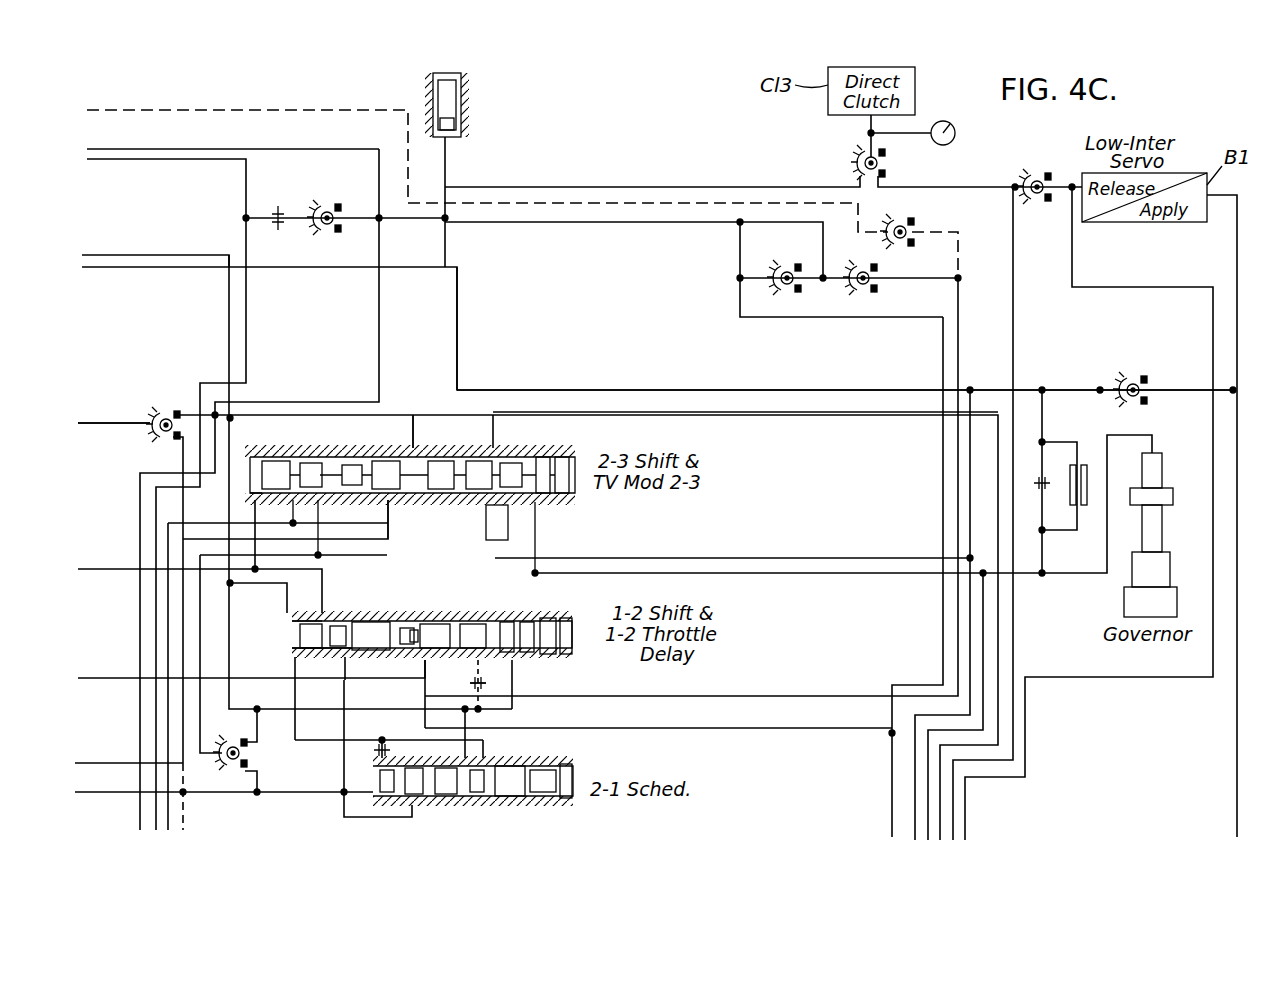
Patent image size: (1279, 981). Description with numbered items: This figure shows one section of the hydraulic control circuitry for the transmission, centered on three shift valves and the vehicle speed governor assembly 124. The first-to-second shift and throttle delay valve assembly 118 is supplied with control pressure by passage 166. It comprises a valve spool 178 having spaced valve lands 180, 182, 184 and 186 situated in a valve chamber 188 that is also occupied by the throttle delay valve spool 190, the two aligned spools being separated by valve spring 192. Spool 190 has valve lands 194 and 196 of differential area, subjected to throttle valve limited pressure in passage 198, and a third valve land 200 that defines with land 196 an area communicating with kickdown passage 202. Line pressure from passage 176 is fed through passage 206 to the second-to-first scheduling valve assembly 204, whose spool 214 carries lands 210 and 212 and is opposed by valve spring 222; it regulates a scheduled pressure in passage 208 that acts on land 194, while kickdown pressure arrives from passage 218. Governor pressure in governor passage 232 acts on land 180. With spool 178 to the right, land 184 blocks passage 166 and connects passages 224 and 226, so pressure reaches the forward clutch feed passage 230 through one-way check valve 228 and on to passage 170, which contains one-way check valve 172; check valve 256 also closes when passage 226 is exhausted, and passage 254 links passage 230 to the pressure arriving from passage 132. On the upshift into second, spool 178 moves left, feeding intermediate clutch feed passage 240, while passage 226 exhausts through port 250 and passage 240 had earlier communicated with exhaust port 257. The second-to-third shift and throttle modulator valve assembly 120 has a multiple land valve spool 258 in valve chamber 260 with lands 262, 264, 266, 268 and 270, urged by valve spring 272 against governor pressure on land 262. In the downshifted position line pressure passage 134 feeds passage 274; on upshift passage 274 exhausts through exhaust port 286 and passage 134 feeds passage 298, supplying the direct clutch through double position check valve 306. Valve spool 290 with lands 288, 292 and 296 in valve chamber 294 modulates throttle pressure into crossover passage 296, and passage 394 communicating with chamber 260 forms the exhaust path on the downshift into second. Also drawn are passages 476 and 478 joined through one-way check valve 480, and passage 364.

The passage 170 is at (232, 152).
The one-way check valve 172 is at (333, 200).
The passage 134 is at (105, 278).
The passage 176 is at (231, 326).
The one-way check valve 480 is at (158, 415).
The passage 478 is at (107, 422).
The passage 476 is at (140, 473).
The passage 274 is at (183, 540).
The passage 364 is at (156, 596).
The intermediate clutch feed passage 240 is at (100, 678).
The valve spool 290 is at (275, 461).
The crossover passage 296 is at (312, 463).
The valve land 288 is at (262, 457).
The valve chamber 294 is at (345, 465).
The valve spring 272 is at (385, 461).
The valve spool land 270 is at (413, 435).
The valve chamber 260 is at (440, 461).
The 2-3 shift and TV modulator valve assembly 120 is at (455, 450).
The multiple land valve spool 258 is at (480, 461).
The exhaust port 286 is at (508, 463).
The valve spool land 262 is at (542, 457).
The valve land 292 is at (293, 505).
The valve spool land 268 is at (325, 505).
The valve spool land 266 is at (390, 520).
The valve spool land 264 is at (490, 518).
The passage 394 is at (540, 520).
The passage 166 is at (588, 558).
The governor passage 232 is at (645, 575).
The passage 198 is at (287, 586).
The valve land 194 is at (300, 632).
The valve land 196 is at (300, 640).
The throttle delay valve spool 190 is at (300, 652).
The valve spring 192 is at (360, 622).
The valve land 186 is at (392, 622).
The valve land 184 is at (435, 624).
The valve land 182 is at (478, 622).
The valve land 180 is at (530, 620).
The valve chamber 188 is at (430, 638).
The valve land 200 is at (345, 664).
The exhaust port 250 is at (395, 670).
The exhaust port 257 is at (485, 676).
The 1-2 shift and 1-2 throttle delay valve assembly 118 is at (550, 660).
The valve spool 178 is at (425, 712).
The passage 202 is at (345, 730).
The passage 208 is at (467, 712).
The passage 224 is at (582, 728).
The passage 206 is at (483, 742).
The valve spring 222 is at (545, 758).
The 2-1 scheduling valve spool 214 is at (380, 780).
The valve land 210 is at (418, 796).
The valve land 212 is at (448, 796).
The 2-1 scheduling valve assembly 204 is at (505, 796).
The kickdown pressure passage 218 is at (215, 793).
The passage 226 is at (655, 696).
The forward clutch feed passage 230 is at (745, 222).
The double position check valve 306 is at (855, 162).
The one-way check valve 256 is at (790, 292).
The one-way check valve 228 is at (866, 292).
The passage 298 is at (866, 412).
The passage 254 is at (942, 462).
The vehicle speed governor assembly 124 is at (1181, 538).
The passage 132 is at (965, 712).